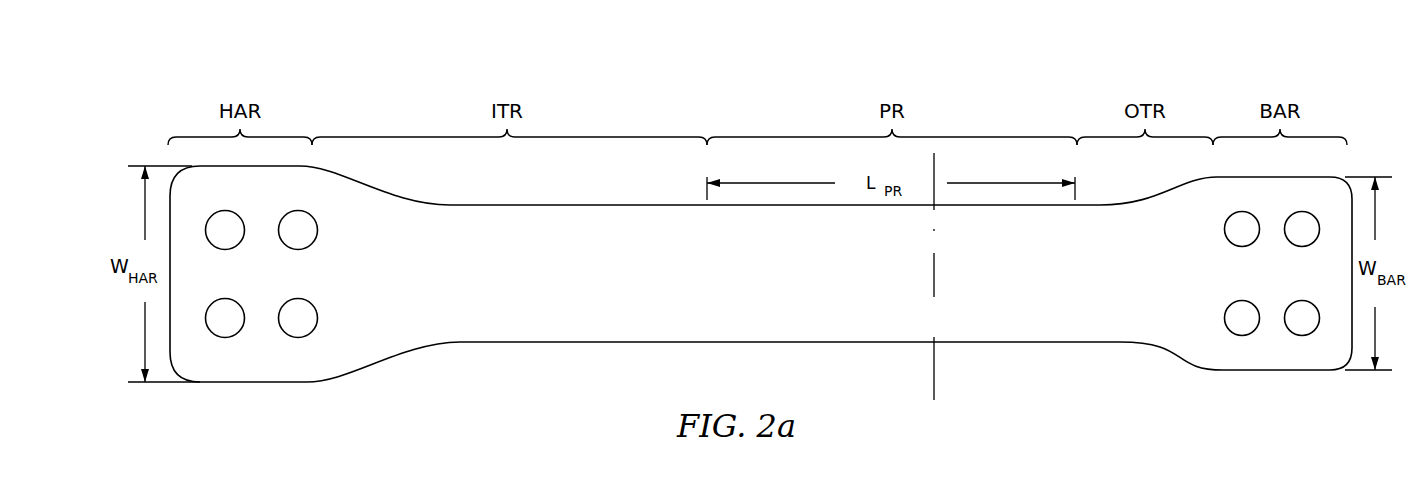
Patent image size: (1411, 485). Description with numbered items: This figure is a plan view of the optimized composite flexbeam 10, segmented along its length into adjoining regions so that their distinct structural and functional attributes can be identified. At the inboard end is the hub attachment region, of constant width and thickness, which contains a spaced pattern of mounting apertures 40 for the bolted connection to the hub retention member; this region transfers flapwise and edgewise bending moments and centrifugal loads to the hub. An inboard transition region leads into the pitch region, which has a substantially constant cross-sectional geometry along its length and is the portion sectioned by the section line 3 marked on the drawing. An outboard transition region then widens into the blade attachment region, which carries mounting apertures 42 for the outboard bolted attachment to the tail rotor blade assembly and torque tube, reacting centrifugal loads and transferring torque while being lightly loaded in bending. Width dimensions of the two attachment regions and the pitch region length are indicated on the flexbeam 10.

The optimized composite flexbeam 10 is at (1056, 79).
The mounting apertures 40 is at (229, 337).
The mounting apertures 42 is at (1284, 220).
The section line 3- 3 is at (968, 400).